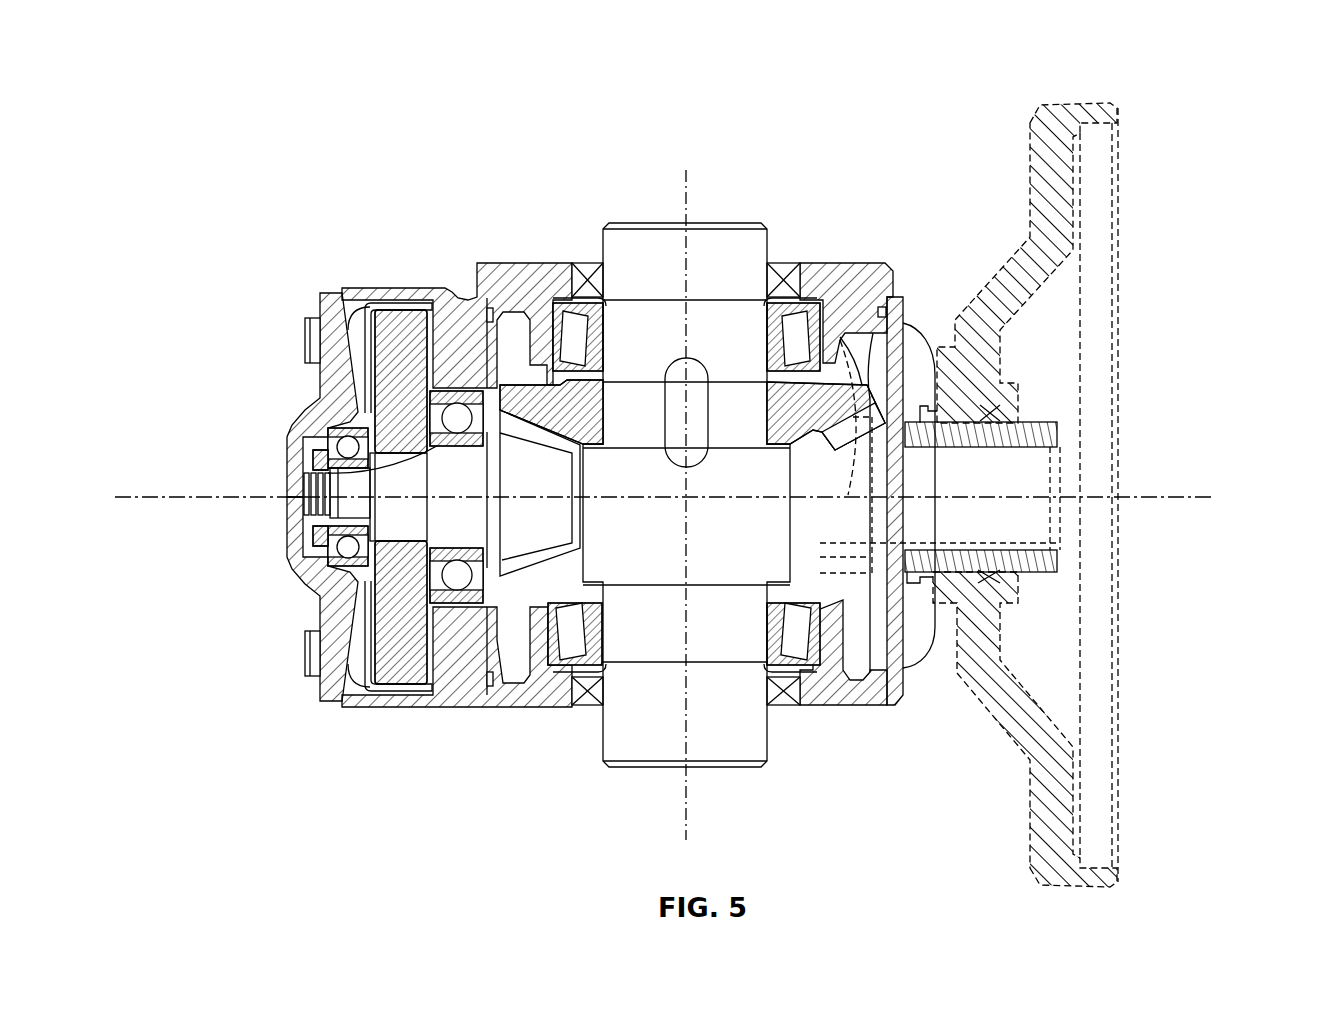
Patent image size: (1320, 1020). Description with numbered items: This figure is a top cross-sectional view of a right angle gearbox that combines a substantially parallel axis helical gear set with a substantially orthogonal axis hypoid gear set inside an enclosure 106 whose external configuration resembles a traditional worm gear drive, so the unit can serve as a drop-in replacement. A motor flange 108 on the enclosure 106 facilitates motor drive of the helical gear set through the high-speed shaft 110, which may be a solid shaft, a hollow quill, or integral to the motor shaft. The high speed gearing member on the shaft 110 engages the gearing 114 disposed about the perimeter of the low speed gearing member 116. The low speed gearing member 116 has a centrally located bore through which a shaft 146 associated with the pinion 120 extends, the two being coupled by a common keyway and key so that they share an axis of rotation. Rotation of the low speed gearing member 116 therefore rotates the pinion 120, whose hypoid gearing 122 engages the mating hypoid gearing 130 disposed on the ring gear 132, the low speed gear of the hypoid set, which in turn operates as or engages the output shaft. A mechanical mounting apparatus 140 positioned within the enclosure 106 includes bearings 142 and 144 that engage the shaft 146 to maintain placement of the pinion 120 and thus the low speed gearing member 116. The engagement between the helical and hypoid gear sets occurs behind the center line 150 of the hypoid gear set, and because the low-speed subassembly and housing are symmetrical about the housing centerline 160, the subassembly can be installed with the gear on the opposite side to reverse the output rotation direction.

The enclosure 106 is at (453, 708).
The motor flange 108 is at (1078, 100).
The shaft 110 is at (1030, 480).
The gearing 114 is at (398, 310).
The low speed gearing member 116 is at (360, 423).
The pinion 120 is at (512, 540).
The hypoid gearing 122 is at (520, 565).
The mating hypoid gearing 130 is at (520, 400).
The ring gear 132 is at (855, 382).
The mechanical mounting apparatus 140 is at (328, 437).
The bearing 142 is at (327, 533).
The bearing 144 is at (330, 470).
The shaft 146 is at (333, 503).
The center line 150 is at (688, 173).
The housing centerline 160 is at (1213, 497).